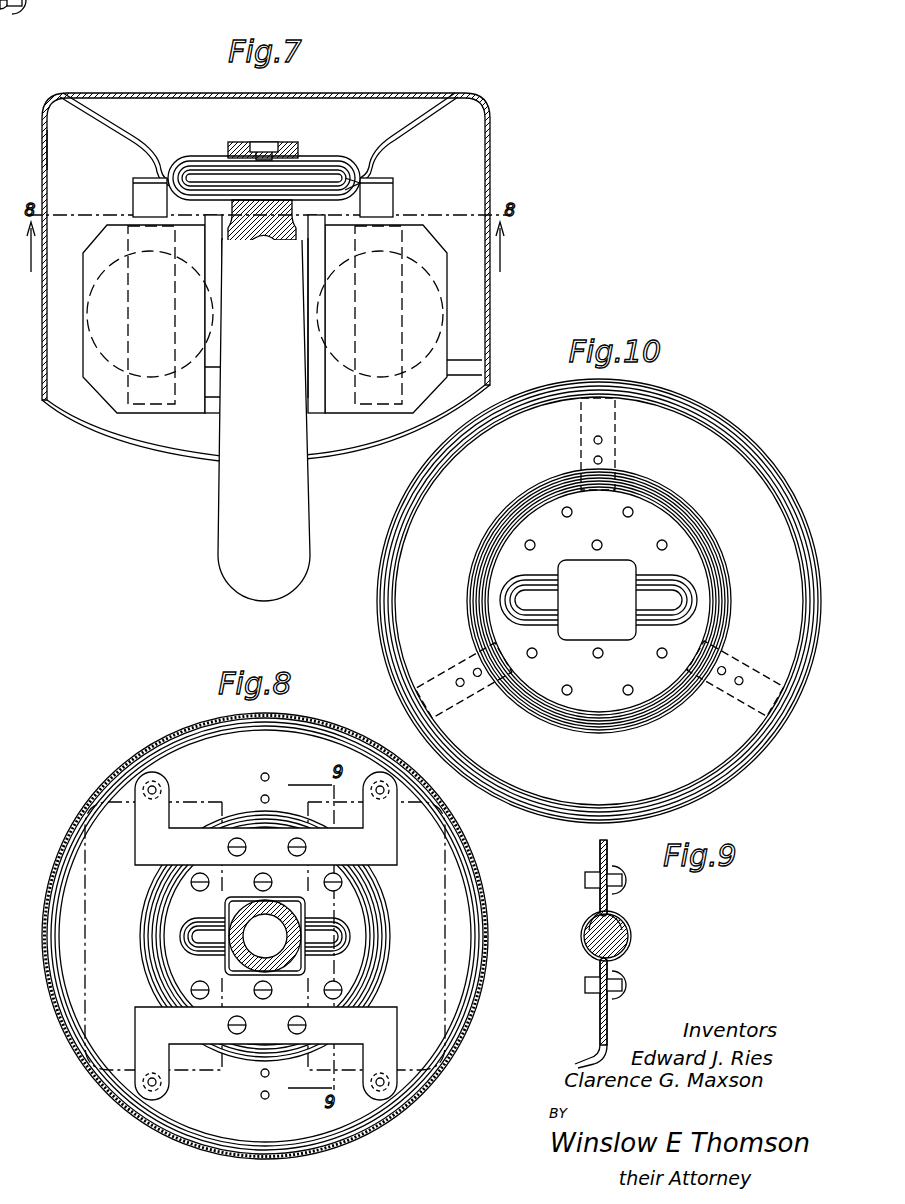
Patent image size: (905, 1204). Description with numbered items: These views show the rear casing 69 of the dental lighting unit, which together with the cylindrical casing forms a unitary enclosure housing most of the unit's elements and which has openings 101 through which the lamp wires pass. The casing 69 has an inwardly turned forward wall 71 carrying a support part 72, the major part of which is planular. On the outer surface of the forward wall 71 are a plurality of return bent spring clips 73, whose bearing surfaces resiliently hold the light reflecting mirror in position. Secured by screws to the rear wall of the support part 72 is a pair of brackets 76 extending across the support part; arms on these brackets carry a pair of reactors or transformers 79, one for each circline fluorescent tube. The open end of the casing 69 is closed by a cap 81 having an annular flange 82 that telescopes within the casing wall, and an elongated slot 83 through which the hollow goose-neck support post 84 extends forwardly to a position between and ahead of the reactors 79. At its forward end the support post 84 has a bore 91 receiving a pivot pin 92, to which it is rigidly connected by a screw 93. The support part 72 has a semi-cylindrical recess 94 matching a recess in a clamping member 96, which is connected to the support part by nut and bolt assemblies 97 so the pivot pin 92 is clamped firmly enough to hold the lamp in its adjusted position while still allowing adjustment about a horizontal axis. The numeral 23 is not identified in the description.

In FIG. 7, the casing 69 is at (489, 308).
In FIG. 10, the casing 69 is at (752, 452).
In FIG. 8, the casing 69 is at (470, 852).
In FIG. 7, the openings 101 is at (50, 152).
In FIG. 7, the forward wall 71 is at (125, 136).
In FIG. 9, the forward wall 71 is at (580, 1062).
In FIG. 7, the support part 72 is at (350, 150).
In FIG. 10, the support part 72 is at (660, 524).
In FIG. 9, the support part 72 is at (598, 848).
In FIG. 10, the return bent spring clips 73 is at (616, 450).
In FIG. 7, the brackets 76 is at (140, 190).
In FIG. 8, the brackets 76 is at (266, 936).
In FIG. 7, the reactors or transformers 79 is at (112, 248).
In FIG. 8, the reactors or transformers 79 is at (88, 984).
In FIG. 7, the cap 81 is at (163, 435).
In FIG. 7, the annular flange 82 is at (470, 366).
In FIG. 7, the elongated slot 83 is at (230, 455).
In FIG. 7, the support post 84 is at (310, 568).
In FIG. 7, the shaft 23 is at (297, 440).
In FIG. 8, the shaft 23 is at (278, 910).
In FIG. 7, the bore 91 is at (300, 160).
In FIG. 7, the pivot pin 92 is at (198, 168).
In FIG. 8, the pivot pin 92 is at (306, 916).
In FIG. 9, the pivot pin 92 is at (630, 940).
In FIG. 7, the screw 93 is at (268, 142).
In FIG. 10, the semi-cylindrical recess 94 is at (535, 598).
In FIG. 9, the semi-cylindrical recess 94 is at (588, 945).
In FIG. 7, the clamping member 96 is at (360, 185).
In FIG. 8, the clamping member 96 is at (352, 928).
In FIG. 9, the clamping member 96 is at (626, 926).
In FIG. 8, the nut and bolt assemblies 97 is at (210, 882).
In FIG. 9, the nut and bolt assemblies 97 is at (626, 880).